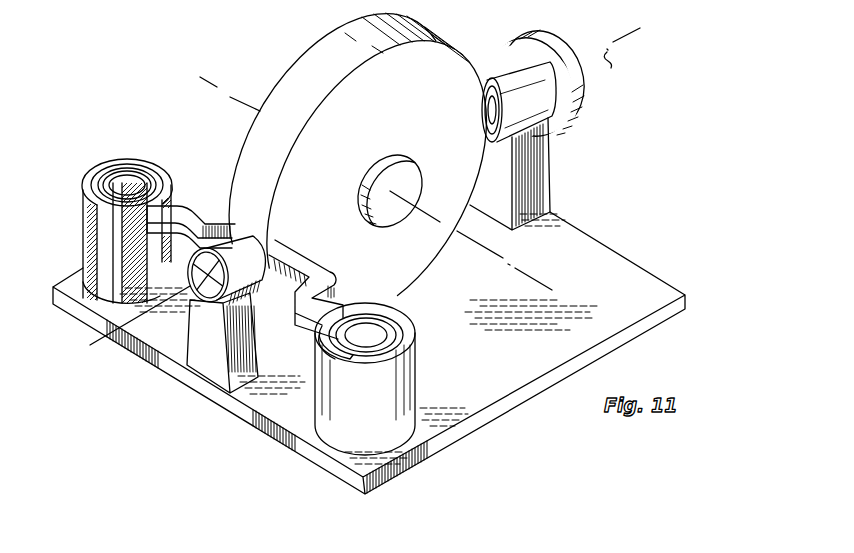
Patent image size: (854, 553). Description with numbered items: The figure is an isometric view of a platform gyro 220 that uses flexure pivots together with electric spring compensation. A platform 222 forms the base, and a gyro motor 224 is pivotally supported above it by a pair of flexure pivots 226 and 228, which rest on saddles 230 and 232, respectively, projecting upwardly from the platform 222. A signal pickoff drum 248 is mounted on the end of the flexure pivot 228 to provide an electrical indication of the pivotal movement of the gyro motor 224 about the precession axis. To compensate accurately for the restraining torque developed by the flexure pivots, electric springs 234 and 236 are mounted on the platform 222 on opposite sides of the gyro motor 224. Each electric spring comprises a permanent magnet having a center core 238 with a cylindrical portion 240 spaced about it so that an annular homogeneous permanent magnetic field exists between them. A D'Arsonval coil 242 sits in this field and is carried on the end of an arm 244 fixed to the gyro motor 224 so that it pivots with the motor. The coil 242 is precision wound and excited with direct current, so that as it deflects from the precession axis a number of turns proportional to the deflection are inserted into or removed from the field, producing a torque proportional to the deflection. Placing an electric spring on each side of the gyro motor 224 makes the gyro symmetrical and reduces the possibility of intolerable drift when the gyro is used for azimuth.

The platform gyro 220 is at (369, 253).
The platform 222 is at (632, 266).
The gyro motor 224 is at (293, 76).
The flexure pivot 226 is at (219, 222).
The flexure pivot 228 is at (488, 78).
The saddle 230 is at (208, 374).
The saddle 232 is at (549, 168).
The electric spring 234 is at (238, 238).
The electric spring 236 is at (417, 372).
The center core 238 is at (122, 241).
The cylindrical portion 240 is at (88, 218).
The D'Arsonval coil 242 is at (126, 177).
The arm 244 is at (190, 208).
The signal pickoff drum 248 is at (545, 48).